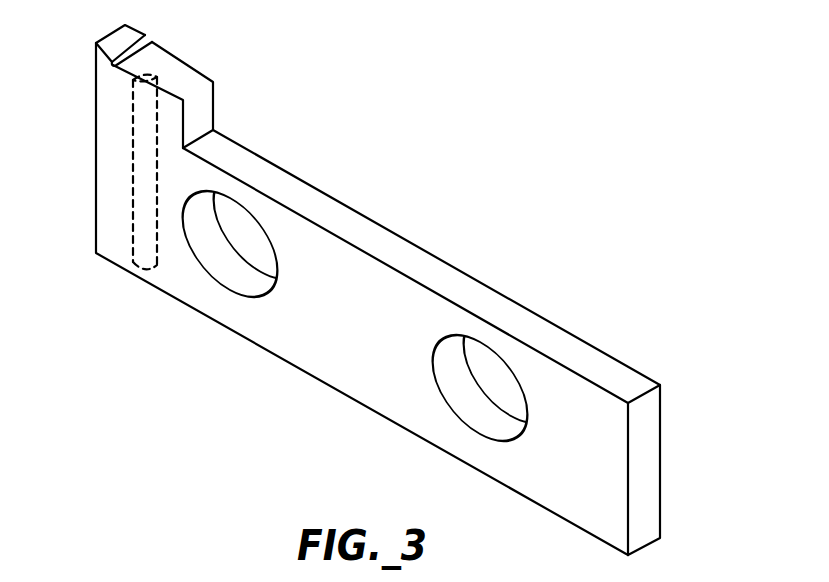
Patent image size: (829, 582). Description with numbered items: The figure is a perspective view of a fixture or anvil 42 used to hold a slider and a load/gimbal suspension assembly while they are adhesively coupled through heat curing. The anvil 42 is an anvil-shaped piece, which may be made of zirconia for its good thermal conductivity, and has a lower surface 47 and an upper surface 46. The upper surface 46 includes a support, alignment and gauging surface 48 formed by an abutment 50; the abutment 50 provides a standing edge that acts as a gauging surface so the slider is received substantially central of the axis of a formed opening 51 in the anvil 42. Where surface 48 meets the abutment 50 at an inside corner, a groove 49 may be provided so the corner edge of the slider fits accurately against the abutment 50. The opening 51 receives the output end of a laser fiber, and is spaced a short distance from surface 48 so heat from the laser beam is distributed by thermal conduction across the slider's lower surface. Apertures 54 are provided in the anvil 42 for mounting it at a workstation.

The fixture or anvil 42 is at (375, 294).
The upper surface 46 is at (352, 223).
The lower surface 47 is at (644, 550).
The support, alignment and gauging surface 48 is at (188, 78).
The groove 49 is at (143, 49).
The abutment 50 is at (118, 37).
The formed opening 51 is at (132, 188).
The apertures 54 is at (228, 273).